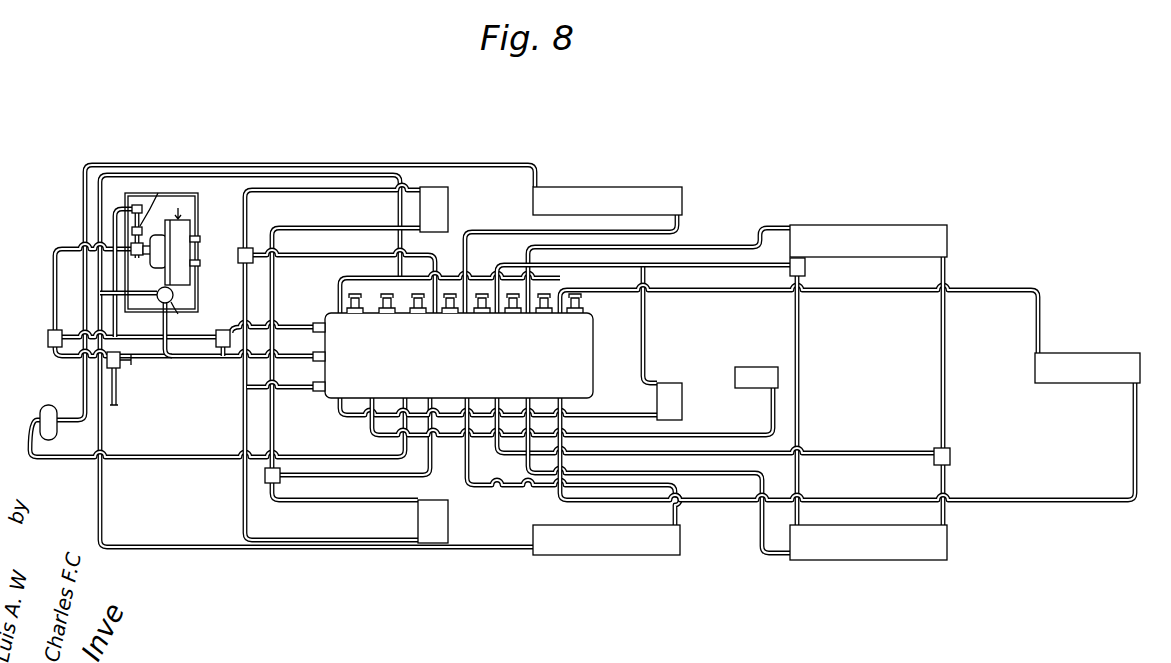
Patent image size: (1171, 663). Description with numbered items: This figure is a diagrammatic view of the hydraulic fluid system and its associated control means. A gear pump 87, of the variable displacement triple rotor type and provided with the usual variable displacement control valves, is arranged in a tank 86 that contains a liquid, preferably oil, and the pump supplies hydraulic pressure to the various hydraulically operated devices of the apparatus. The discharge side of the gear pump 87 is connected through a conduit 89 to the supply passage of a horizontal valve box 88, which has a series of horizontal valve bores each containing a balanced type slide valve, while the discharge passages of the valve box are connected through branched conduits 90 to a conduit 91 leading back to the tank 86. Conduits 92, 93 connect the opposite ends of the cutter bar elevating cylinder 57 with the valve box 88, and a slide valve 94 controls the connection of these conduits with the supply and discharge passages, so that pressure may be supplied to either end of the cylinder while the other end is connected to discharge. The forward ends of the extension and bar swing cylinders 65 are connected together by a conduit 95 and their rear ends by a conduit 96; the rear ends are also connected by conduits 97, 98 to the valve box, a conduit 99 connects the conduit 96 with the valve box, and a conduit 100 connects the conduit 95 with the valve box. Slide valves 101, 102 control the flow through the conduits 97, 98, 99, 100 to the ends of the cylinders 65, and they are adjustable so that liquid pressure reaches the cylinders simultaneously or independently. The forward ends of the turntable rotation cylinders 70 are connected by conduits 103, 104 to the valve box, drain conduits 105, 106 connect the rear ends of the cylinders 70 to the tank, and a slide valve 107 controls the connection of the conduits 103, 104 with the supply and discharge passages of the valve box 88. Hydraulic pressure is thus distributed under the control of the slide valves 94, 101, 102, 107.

The cutter bar elevating cylinder 57 is at (1088, 353).
The extension and bar swing cylinders 65 is at (869, 225).
The turntable rotation cylinders 70 is at (587, 198).
The tank 86 is at (192, 309).
The gear pump 87 is at (178, 256).
The valve box 88 is at (590, 372).
The conduit 89 is at (48, 280).
The branched conduits 90 is at (313, 326).
The conduit 91 is at (203, 357).
The conduit 92 is at (868, 290).
The conduit 93 is at (1052, 501).
The slide valve 94 is at (582, 300).
The conduit 95 is at (947, 405).
The conduit 96 is at (800, 408).
The conduit 97 is at (712, 247).
The conduit 98 is at (766, 556).
The conduit 99 is at (753, 270).
The conduit 100 is at (880, 448).
The slide valve 101 is at (545, 314).
The slide valve 102 is at (514, 314).
The conduit 103 is at (682, 222).
The conduit 104 is at (517, 488).
The drain conduit 105 is at (445, 153).
The drain conduit 106 is at (518, 550).
The slide valve 107 is at (481, 314).